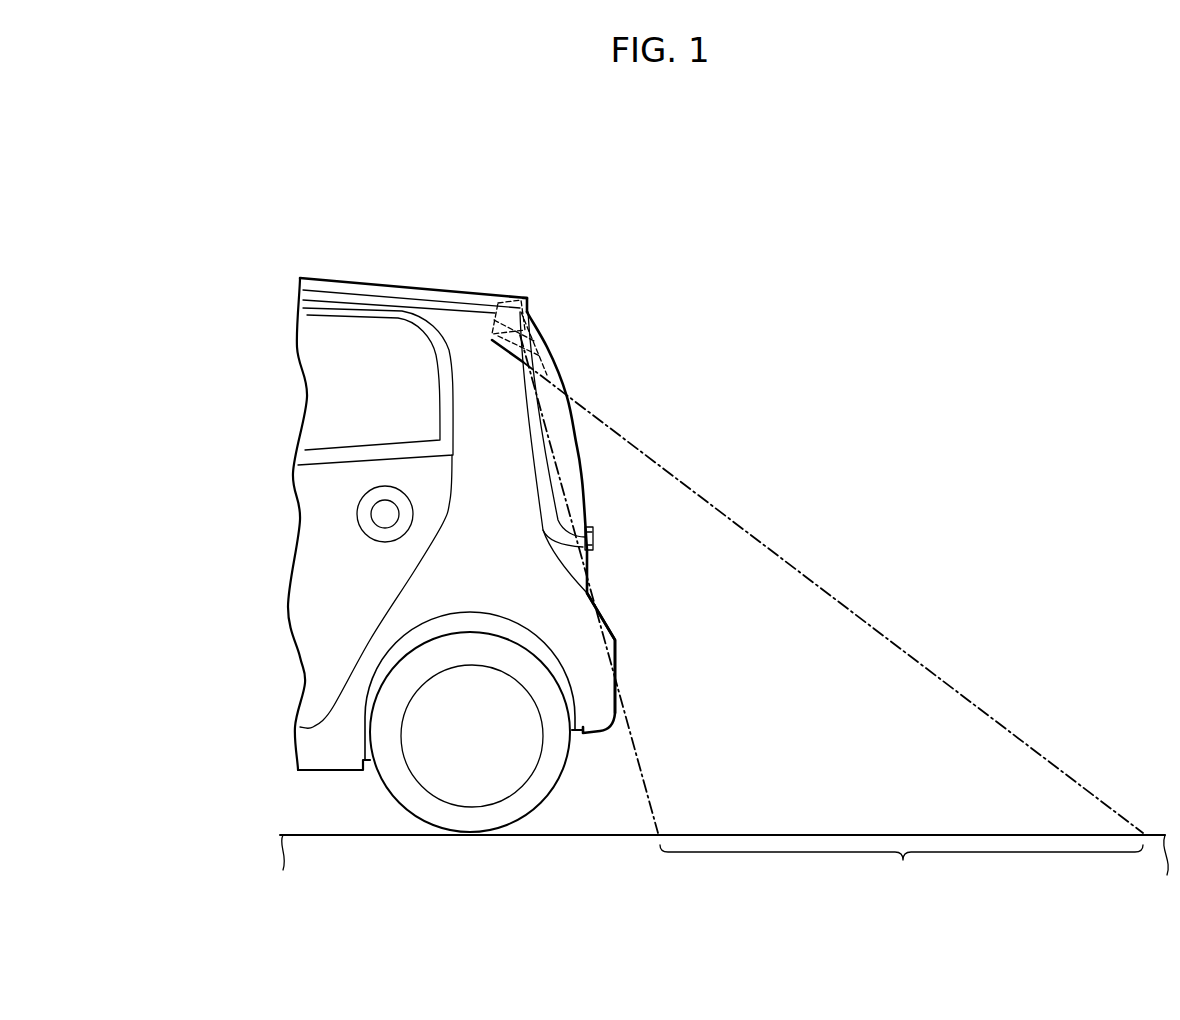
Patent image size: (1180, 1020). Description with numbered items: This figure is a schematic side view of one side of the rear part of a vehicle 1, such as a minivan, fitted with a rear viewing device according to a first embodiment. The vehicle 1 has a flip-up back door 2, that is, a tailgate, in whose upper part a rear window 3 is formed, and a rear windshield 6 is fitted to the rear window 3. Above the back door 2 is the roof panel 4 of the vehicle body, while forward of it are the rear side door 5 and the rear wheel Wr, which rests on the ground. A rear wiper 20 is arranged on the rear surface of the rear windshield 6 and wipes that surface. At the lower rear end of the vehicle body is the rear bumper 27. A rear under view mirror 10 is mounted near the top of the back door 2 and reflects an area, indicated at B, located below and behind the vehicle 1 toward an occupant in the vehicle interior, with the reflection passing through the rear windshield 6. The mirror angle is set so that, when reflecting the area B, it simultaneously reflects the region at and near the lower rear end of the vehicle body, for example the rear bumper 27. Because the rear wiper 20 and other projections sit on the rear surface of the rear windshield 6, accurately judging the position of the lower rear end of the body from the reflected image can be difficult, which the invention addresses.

The vehicle 1 is at (591, 252).
The back door 2 is at (567, 557).
The rear window 3 is at (567, 397).
The roof panel 4 is at (365, 276).
The rear side door 5 is at (317, 521).
The rear windshield 6 is at (556, 462).
The rear under view mirror 10 is at (518, 296).
The rear wiper 20 is at (606, 537).
The rear bumper 27 is at (615, 639).
The rear wheel Wr is at (448, 817).
The area below and behind the vehicle B is at (901, 870).